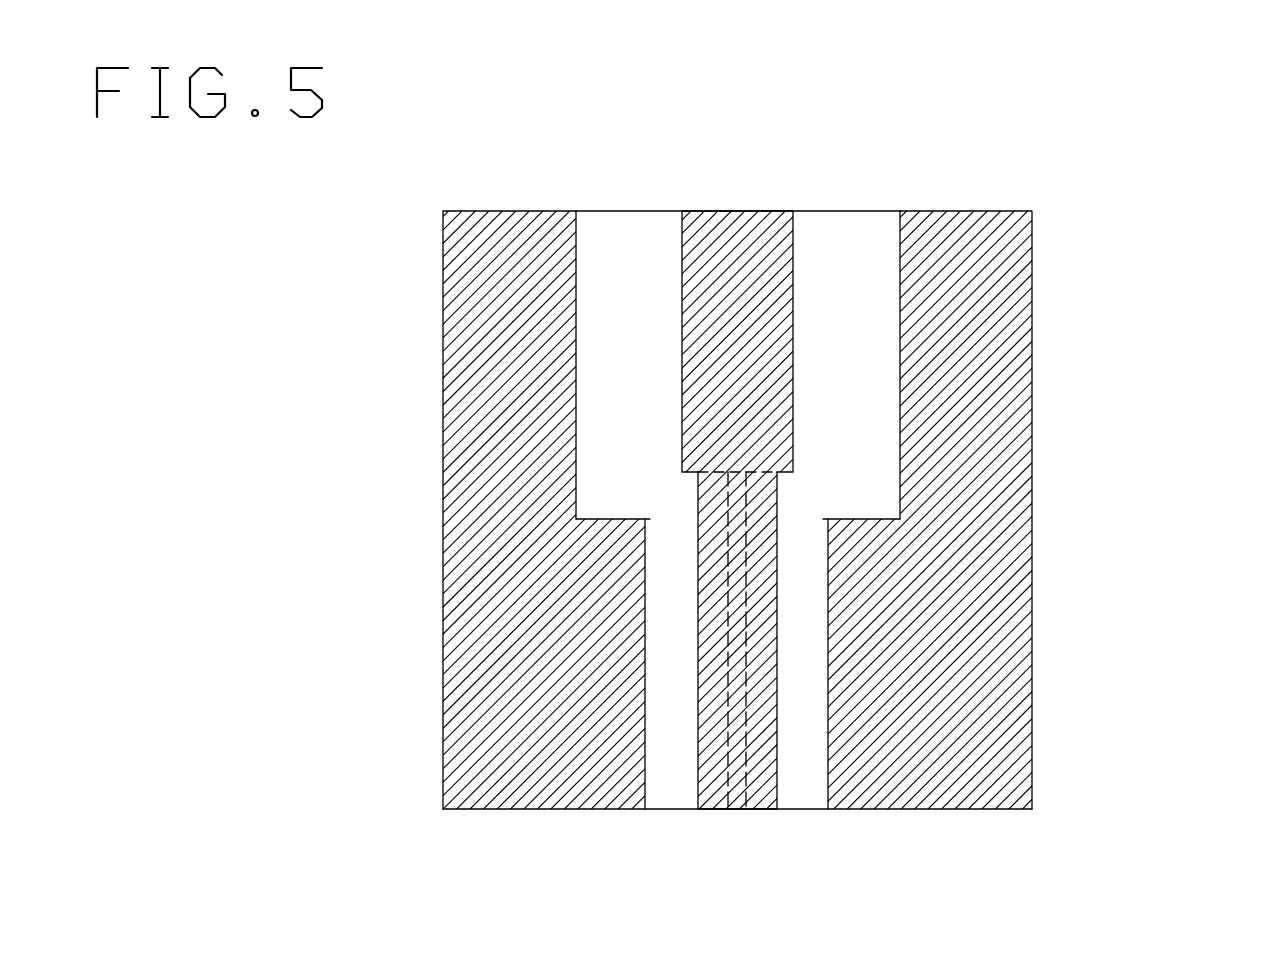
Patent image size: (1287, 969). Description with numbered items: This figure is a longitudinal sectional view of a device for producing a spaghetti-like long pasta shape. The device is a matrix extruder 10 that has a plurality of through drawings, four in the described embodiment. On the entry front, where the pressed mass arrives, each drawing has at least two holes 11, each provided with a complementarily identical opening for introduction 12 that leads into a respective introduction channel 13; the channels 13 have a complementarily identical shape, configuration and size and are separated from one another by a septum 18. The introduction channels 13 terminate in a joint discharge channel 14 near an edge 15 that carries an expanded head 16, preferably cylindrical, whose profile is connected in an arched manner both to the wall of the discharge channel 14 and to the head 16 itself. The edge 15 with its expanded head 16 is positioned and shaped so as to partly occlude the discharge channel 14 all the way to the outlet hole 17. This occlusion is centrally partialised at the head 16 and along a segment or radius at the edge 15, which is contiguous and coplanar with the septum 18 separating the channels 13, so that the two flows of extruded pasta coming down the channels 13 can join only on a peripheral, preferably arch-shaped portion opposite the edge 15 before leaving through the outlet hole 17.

The matrix extruder 10 is at (1070, 228).
The holes 11 is at (625, 173).
The opening for introduction 12 is at (576, 211).
The introduction channels 13 is at (614, 350).
The joint discharge channel 14 is at (670, 663).
The edge 15 is at (738, 555).
The expanded head 16 is at (760, 662).
The outlet hole 17 is at (643, 780).
The septum 18 is at (740, 253).